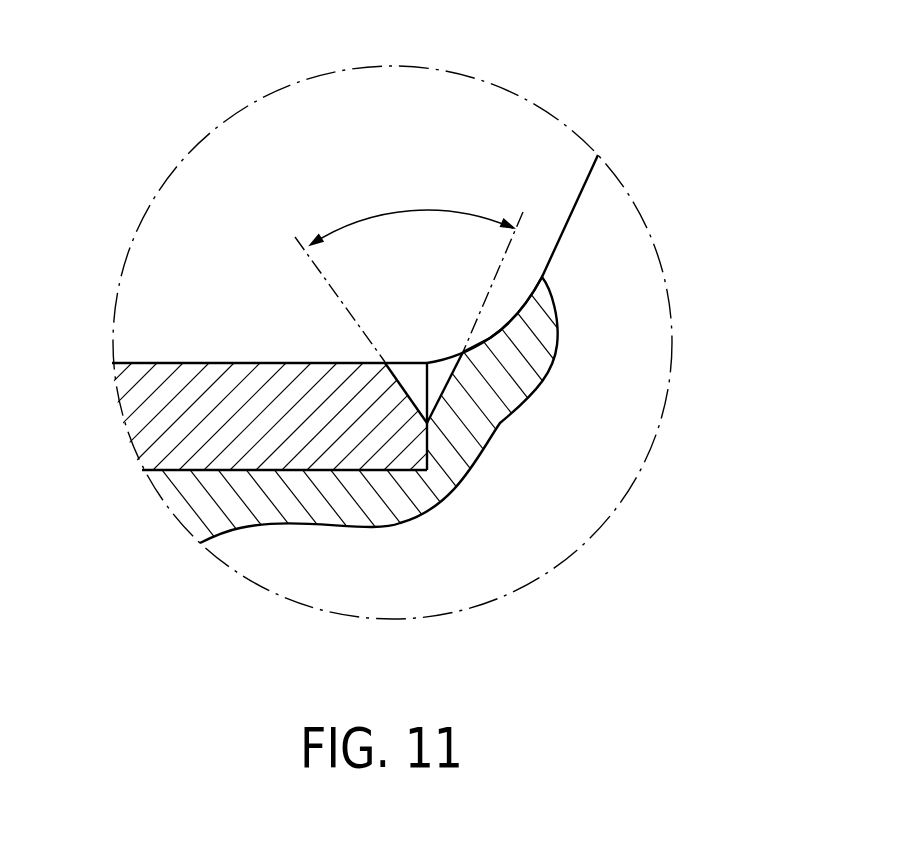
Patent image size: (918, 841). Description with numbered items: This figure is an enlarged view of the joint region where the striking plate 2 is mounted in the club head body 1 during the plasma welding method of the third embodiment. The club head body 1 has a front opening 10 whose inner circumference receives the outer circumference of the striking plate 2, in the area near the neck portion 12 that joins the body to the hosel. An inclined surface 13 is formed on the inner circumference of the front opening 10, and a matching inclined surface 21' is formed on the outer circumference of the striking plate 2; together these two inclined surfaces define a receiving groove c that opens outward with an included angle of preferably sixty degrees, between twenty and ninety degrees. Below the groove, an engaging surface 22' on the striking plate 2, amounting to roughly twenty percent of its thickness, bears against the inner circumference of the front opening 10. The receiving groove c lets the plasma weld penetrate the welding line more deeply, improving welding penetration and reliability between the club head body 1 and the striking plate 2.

The club head body 1 is at (303, 583).
The striking plate 2 is at (183, 387).
The front opening 10 is at (172, 503).
The neck portion 12 is at (485, 340).
The inclined surface 13 is at (457, 365).
The inclined surface 21' is at (315, 352).
The engaging surface 22' is at (518, 518).
The receiving groove c is at (438, 387).